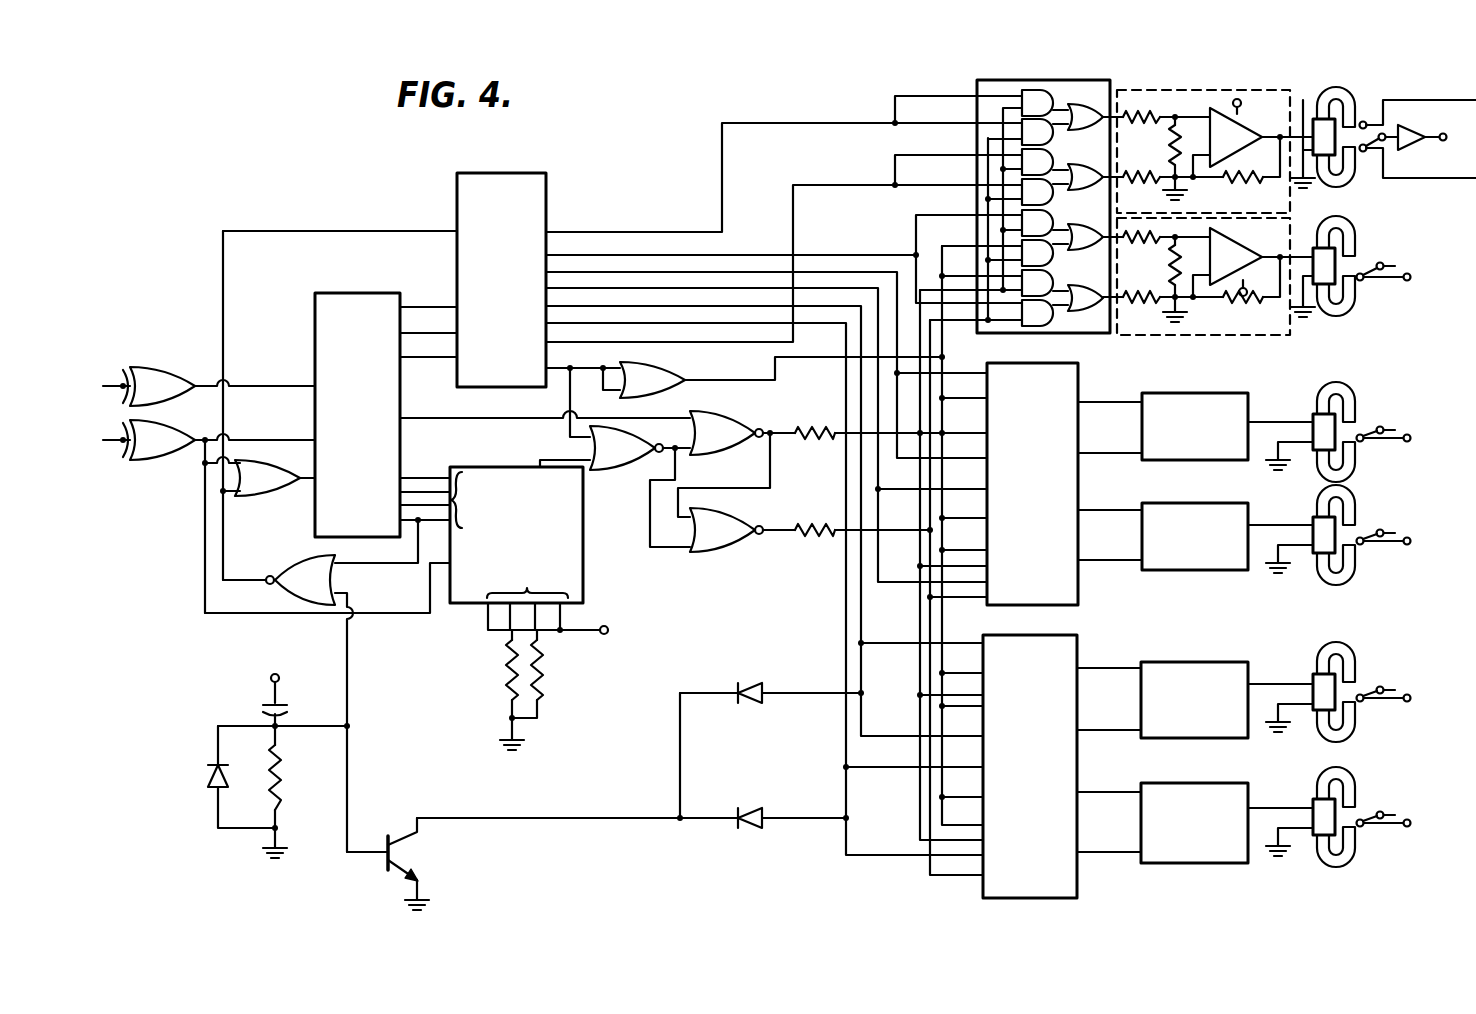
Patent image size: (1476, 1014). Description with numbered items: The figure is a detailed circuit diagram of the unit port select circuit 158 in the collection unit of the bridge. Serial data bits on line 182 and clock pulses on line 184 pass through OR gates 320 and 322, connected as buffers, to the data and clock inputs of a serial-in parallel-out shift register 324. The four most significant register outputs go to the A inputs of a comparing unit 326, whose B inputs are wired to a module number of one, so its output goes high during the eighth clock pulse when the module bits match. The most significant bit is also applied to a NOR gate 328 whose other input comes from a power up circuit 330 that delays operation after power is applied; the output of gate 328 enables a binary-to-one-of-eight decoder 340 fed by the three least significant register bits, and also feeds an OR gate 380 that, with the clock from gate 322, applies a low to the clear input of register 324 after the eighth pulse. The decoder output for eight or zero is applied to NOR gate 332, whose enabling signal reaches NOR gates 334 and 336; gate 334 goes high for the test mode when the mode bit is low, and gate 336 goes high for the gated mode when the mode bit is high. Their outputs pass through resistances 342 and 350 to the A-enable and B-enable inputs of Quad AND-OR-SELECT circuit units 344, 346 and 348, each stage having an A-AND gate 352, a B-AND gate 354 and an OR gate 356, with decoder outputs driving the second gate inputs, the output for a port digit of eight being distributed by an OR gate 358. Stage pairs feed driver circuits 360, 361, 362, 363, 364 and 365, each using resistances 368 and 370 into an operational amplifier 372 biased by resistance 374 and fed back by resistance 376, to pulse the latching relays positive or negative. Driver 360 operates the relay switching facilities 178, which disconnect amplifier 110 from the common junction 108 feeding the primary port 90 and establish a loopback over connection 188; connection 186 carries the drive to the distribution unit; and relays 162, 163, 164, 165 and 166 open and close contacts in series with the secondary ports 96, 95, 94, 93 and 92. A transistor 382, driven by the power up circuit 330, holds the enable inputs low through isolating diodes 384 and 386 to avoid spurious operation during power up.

The unit port select circuit 158 is at (188, 183).
The back plane cross connect line 182 is at (110, 380).
The back plane cross connect line 184 is at (112, 455).
The OR gate 320 is at (158, 368).
The OR gate 322 is at (170, 423).
The shift register 324 is at (315, 312).
The comparing unit 326 is at (583, 562).
The NOR gate 328 is at (278, 568).
The power up circuit 330 is at (177, 681).
The NOR gate 332 is at (635, 468).
The NOR gate 334 is at (728, 455).
The NOR gate 336 is at (720, 560).
The binary to 1 of 8 decoder 340 is at (457, 186).
The resistance 342 is at (812, 438).
The Quad AND-OR-SELECT circuit unit 344 is at (977, 88).
The Quad AND-OR-SELECT circuit unit 346 is at (998, 363).
The Quad AND-OR-SELECT circuit unit 348 is at (988, 637).
The resistance 350 is at (800, 548).
The A-AND gate 352 is at (1040, 95).
The B-AND gate 354 is at (1043, 135).
The OR gate 356 is at (1098, 72).
The OR gate 358 is at (672, 380).
The driver circuit 360 is at (1180, 90).
The driver circuit 361 is at (1230, 340).
The driver circuit 362 is at (1150, 393).
The driver circuit 363 is at (1185, 572).
The driver circuit 364 is at (1190, 662).
The driver circuit 365 is at (1195, 863).
The resistance 368 is at (1150, 112).
The resistance 370 is at (1158, 182).
The operational amplifier 372 is at (1245, 115).
The resistance 374 is at (1170, 140).
The feedback resistance 376 is at (1243, 185).
The OR gate 380 is at (266, 495).
The transistor 382 is at (412, 848).
The isolating diode 384 is at (742, 683).
The isolating diode 386 is at (738, 808).
The back plane cross connection 186 is at (1280, 130).
The back plane cross connection 188 is at (1385, 95).
The relay switching facilities 178 is at (1367, 173).
The amplifier 110 is at (1392, 124).
The common junction 108 is at (1425, 186).
The primary port 90 is at (1447, 142).
The relay 162 is at (1348, 265).
The secondary port 96 is at (1407, 282).
The relay 163 is at (1350, 420).
The secondary port 95 is at (1407, 442).
The relay 164 is at (1348, 523).
The secondary port 94 is at (1407, 545).
The relay 165 is at (1348, 683).
The secondary port 93 is at (1407, 702).
The relay 166 is at (1348, 811).
The secondary port 92 is at (1407, 827).